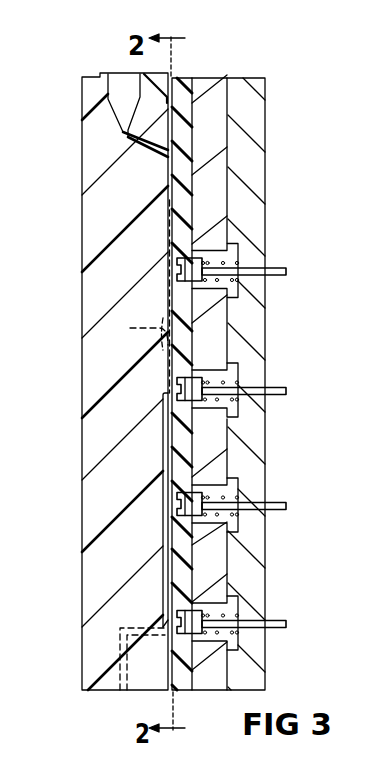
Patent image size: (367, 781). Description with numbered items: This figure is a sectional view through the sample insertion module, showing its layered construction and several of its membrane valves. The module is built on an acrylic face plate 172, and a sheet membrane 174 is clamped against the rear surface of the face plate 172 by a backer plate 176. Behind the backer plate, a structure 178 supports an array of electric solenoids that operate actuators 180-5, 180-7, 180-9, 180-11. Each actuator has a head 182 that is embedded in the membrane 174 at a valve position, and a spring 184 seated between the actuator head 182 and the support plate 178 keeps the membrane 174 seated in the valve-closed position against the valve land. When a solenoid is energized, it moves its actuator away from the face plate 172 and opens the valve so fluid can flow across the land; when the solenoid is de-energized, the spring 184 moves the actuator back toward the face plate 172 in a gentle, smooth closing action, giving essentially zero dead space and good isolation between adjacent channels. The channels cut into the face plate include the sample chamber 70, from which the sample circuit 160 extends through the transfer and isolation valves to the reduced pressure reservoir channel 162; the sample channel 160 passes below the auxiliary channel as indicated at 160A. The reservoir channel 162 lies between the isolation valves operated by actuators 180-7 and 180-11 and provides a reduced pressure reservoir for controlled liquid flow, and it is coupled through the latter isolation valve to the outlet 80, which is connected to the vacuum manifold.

The sample chamber 70 is at (107, 93).
The sample circuit 160 is at (126, 141).
The sample channel lower portion 160A is at (130, 328).
The reduced pressure reservoir channel 162 is at (165, 462).
The face plate 172 is at (93, 692).
The sheet membrane 174 is at (188, 692).
The backer plate 176 is at (205, 80).
The support structure 178 is at (267, 100).
The actuator 180-5 is at (280, 277).
The actuator 180-7 is at (280, 385).
The actuator 180-9 is at (287, 509).
The actuator 180-11 is at (287, 617).
The actuator head 182 is at (177, 268).
The spring 184 is at (220, 265).
The outlet 80 is at (127, 692).